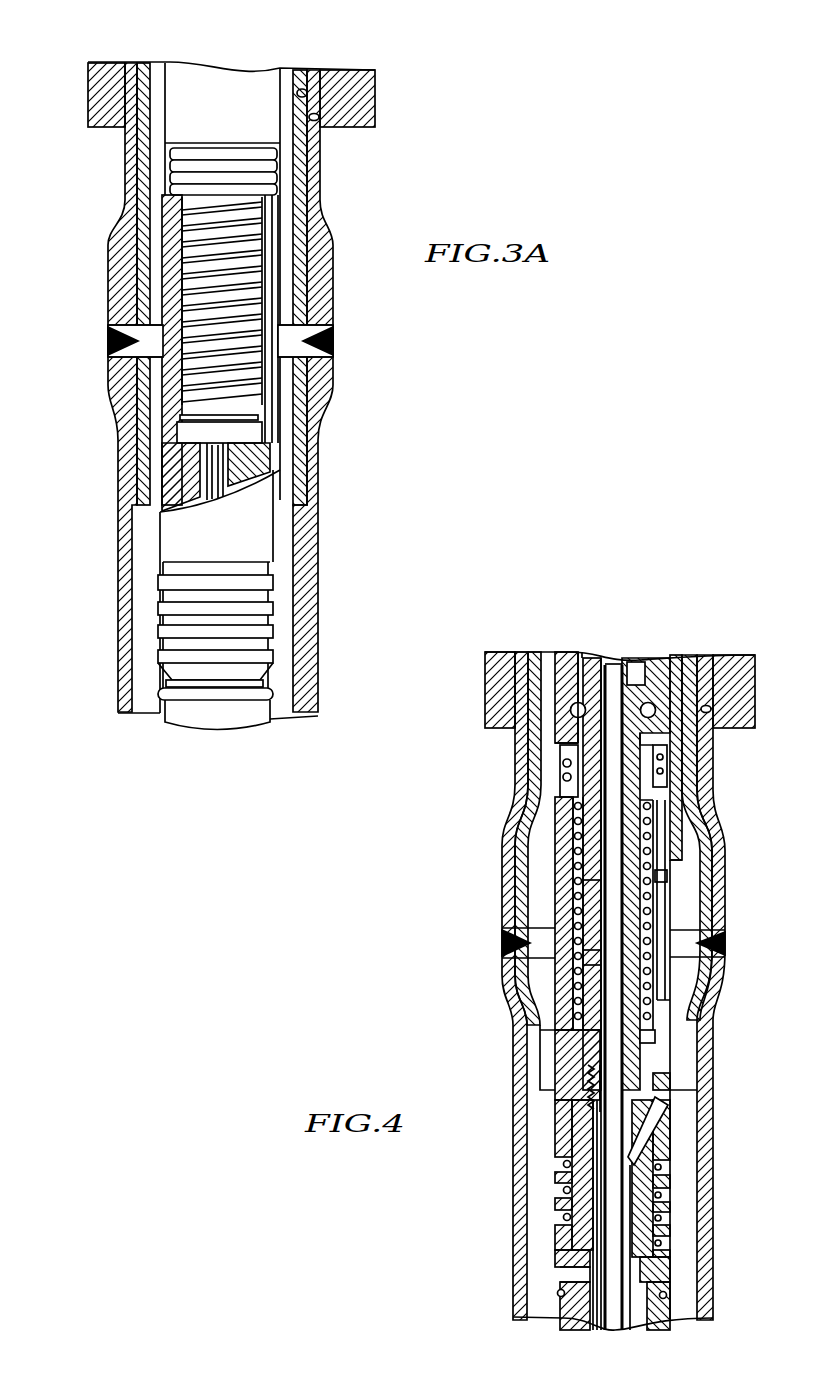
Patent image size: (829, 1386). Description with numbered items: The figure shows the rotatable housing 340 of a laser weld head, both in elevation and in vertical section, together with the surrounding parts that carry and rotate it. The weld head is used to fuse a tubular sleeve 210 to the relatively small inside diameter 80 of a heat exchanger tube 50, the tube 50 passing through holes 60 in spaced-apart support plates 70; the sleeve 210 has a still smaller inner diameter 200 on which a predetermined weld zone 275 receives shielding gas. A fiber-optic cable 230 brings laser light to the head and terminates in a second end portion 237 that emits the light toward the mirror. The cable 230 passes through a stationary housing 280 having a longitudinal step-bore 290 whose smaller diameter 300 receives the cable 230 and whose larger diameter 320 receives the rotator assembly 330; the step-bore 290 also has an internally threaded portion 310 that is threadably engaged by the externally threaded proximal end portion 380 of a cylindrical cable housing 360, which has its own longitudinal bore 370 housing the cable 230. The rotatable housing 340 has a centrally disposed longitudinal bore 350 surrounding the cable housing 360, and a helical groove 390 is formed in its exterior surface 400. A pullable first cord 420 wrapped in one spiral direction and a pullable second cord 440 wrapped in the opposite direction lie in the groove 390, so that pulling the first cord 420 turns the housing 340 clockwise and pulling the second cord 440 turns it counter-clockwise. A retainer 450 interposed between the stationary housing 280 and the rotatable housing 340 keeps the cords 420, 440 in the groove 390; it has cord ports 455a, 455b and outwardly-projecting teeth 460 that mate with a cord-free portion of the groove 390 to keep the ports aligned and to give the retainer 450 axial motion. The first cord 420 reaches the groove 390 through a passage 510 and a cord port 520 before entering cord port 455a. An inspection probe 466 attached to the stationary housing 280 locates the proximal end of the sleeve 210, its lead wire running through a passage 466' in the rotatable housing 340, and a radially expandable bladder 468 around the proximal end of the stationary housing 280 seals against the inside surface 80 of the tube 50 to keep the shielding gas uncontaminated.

In FIG. 3A, the tube 50 is at (127, 108).
In FIG. 3A, the support plate 70 is at (340, 77).
In FIG. 4, the support plate 70 is at (732, 658).
In FIG. 3A, the inside diameter 80 is at (305, 97).
In FIG. 4, the inside diameter 80 is at (690, 682).
In FIG. 3A, the hole 60 is at (316, 118).
In FIG. 4, the hole 60 is at (705, 712).
In FIG. 3A, the tubular sleeve 210 is at (317, 165).
In FIG. 4, the tubular sleeve 210 is at (716, 745).
In FIG. 3A, the inner diameter 200 is at (287, 70).
In FIG. 4, the inner diameter 200 is at (678, 665).
In FIG. 3A, the weld zone 275 is at (325, 346).
In FIG. 3A, the stationary housing 280 is at (165, 543).
In FIG. 4, the stationary housing 280 is at (558, 1233).
In FIG. 3A, the inspection probe 466 is at (171, 631).
In FIG. 4, the inspection probe 466 is at (519, 1212).
In FIG. 3A, the fiber-optic cable 230 is at (217, 503).
In FIG. 4, the fiber-optic cable 230 is at (608, 1318).
In FIG. 3A, the radially expandable bladder 468 is at (193, 718).
In FIG. 4, the radially expandable bladder 468 is at (653, 1308).
In FIG. 4, the second end portion 237 is at (613, 670).
In FIG. 4, the first cord 420 is at (577, 817).
In FIG. 4, the exterior surface 400 is at (573, 830).
In FIG. 4, the spiral groove 390 is at (573, 850).
In FIG. 4, the longitudinal bore 370 is at (573, 870).
In FIG. 4, the cable housing 360 is at (590, 892).
In FIG. 4, the longitudinal bore 350 is at (573, 927).
In FIG. 4, the rotatable housing 340 is at (573, 955).
In FIG. 4, the second cord 440 is at (557, 963).
In FIG. 4, the rotator assembly 330 is at (551, 987).
In FIG. 4, the larger diameter 320 is at (557, 1025).
In FIG. 4, the externally threaded proximal end portion 380 is at (587, 1082).
In FIG. 4, the internally threaded portion 310 is at (583, 1123).
In FIG. 4, the smaller diameter 300 is at (567, 1166).
In FIG. 4, the step-bore 290 is at (567, 1189).
In FIG. 4, the passage 466' is at (524, 1279).
In FIG. 4, the passage 510 is at (633, 1178).
In FIG. 4, the cord port 520 is at (657, 1082).
In FIG. 4, the cord port 455b is at (670, 820).
In FIG. 4, the teeth 460 is at (653, 847).
In FIG. 4, the cord port 455a is at (657, 877).
In FIG. 4, the retainer 450 is at (670, 900).